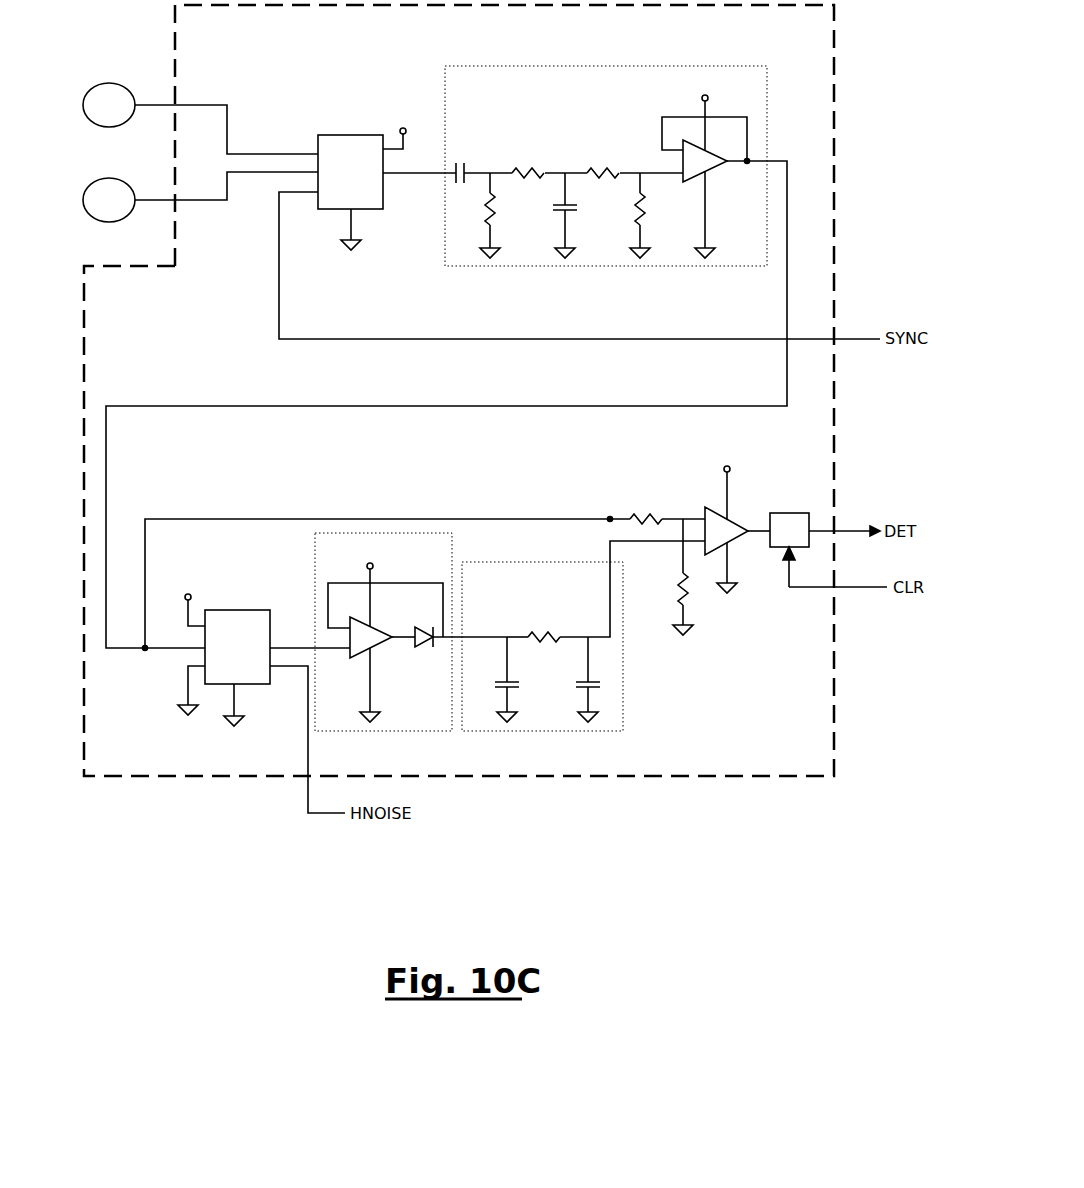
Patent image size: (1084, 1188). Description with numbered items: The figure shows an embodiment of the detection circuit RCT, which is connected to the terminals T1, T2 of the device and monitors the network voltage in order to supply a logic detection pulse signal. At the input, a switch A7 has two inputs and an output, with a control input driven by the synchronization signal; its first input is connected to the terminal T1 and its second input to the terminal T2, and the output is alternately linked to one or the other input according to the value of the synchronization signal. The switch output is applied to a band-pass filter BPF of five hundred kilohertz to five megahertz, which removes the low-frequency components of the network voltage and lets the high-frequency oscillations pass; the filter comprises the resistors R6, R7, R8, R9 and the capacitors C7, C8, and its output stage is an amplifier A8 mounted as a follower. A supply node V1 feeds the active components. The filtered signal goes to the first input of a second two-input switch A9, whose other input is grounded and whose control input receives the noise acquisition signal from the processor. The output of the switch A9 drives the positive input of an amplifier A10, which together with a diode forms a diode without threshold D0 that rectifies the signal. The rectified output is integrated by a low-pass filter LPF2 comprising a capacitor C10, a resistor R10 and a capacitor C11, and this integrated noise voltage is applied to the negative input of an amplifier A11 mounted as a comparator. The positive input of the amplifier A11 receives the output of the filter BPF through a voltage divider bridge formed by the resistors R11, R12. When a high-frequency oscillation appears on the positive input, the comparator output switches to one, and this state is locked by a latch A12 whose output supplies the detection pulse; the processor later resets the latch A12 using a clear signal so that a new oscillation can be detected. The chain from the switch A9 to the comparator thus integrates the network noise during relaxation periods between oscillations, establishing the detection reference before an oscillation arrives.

The detection circuit RCT is at (253, 45).
The terminal T1 is at (200, 118).
The terminal T2 is at (200, 197).
The switch A7 is at (365, 135).
The supply voltage V1 is at (457, 349).
The band-pass filter BPF is at (540, 101).
The capacitor C7 is at (480, 161).
The resistor R6 is at (479, 215).
The resistor R7 is at (549, 161).
The capacitor C8 is at (551, 215).
The resistor R8 is at (635, 161).
The resistor R9 is at (630, 215).
The amplifier A8 is at (712, 167).
The switch A9 is at (238, 610).
The diode without threshold D0 is at (400, 561).
The amplifier A10 is at (388, 628).
The low-pass filter LPF2 is at (513, 587).
The capacitor C10 is at (492, 679).
The resistor R10 is at (606, 591).
The capacitor C11 is at (571, 679).
The resistor R11 is at (667, 511).
The resistor R12 is at (668, 577).
The amplifier A11 is at (703, 510).
The latch A12 is at (828, 550).